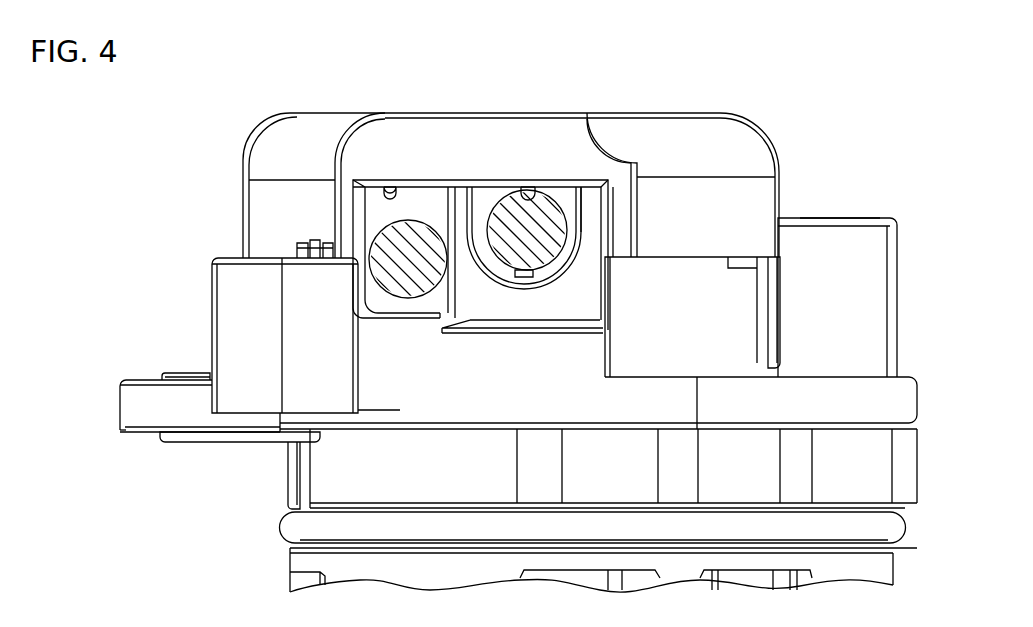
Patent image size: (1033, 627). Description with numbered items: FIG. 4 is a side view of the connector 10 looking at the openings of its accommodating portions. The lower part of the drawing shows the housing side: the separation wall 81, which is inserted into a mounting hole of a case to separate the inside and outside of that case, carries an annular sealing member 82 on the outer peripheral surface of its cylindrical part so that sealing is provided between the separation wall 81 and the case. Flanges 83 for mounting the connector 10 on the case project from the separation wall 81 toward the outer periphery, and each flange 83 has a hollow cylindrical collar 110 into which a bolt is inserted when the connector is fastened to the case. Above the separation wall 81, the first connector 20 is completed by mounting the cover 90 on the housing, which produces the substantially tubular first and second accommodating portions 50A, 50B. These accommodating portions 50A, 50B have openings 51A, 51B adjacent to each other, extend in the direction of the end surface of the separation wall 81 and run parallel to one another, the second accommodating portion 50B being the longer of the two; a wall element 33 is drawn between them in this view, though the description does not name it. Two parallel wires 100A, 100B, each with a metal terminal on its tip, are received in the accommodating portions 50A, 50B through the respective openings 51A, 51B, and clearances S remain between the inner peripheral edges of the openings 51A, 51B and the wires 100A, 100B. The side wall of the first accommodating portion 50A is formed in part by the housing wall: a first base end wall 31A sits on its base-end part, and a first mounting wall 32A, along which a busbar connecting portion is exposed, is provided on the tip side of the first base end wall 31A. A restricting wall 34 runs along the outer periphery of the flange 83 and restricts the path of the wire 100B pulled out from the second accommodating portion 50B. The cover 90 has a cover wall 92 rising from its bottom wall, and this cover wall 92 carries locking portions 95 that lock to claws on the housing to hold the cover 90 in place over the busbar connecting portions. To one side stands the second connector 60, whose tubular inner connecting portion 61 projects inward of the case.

The connector 10 is at (872, 92).
The first connector 20 is at (332, 104).
The first base end wall 31A is at (588, 207).
The first mounting wall 32A is at (745, 282).
The partition wall 33 is at (460, 203).
The restricting wall 34 is at (243, 291).
The first accommodating portion 50A is at (562, 190).
The second accommodating portion 50B is at (427, 194).
The opening 51A is at (528, 190).
The opening 51B is at (390, 186).
The second connector 60 is at (871, 210).
The inner connecting portion 61 is at (820, 217).
The separation wall 81 is at (288, 475).
The sealing member 82 is at (280, 528).
The flange 83 is at (140, 380).
The cover 90 is at (737, 114).
The cover wall 92 is at (243, 213).
The locking portion 95 is at (780, 342).
The wire 100A is at (525, 258).
The wire 100B is at (412, 293).
The collar 110 is at (182, 373).
The clearance S is at (442, 224).